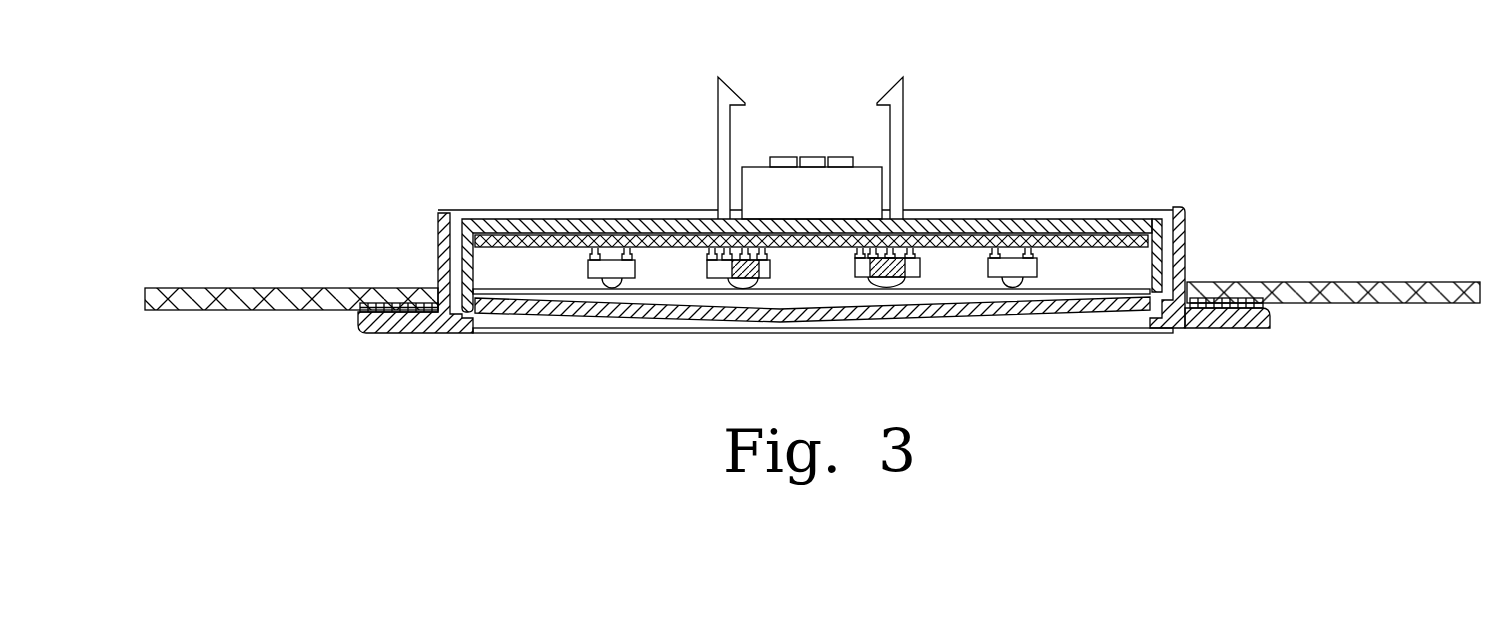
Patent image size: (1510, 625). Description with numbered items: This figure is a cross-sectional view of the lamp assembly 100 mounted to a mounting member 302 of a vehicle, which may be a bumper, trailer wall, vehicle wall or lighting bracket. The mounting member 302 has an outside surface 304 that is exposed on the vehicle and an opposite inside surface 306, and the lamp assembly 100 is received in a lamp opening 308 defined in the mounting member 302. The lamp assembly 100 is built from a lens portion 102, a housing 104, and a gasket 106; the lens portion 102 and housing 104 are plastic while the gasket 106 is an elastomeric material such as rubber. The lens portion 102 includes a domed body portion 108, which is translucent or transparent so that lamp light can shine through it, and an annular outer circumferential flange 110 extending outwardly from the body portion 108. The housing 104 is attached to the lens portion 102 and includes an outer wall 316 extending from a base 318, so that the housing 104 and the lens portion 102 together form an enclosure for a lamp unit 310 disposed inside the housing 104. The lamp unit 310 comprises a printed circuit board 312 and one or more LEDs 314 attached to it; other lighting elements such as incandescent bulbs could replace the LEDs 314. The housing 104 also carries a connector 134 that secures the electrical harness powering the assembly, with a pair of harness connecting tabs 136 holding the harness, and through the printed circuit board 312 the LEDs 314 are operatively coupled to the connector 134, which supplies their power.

The lamp assembly 100 is at (1015, 122).
The lens portion 102 is at (1188, 262).
The housing 104 is at (1045, 218).
The gasket 106 is at (1265, 305).
The domed body portion 108 is at (1108, 310).
The outer circumferential flange 110 is at (1240, 332).
The connector 134 is at (865, 157).
The harness connecting tabs 136 is at (722, 77).
The mounting member 302 is at (275, 290).
The outside surface 304 is at (1397, 322).
The inside surface 306 is at (1328, 268).
The lamp opening 308 is at (430, 280).
The lamp unit 310 is at (569, 248).
The printed circuit board 312 is at (643, 240).
The LEDs 314 is at (883, 283).
The outer wall 316 is at (1162, 236).
The base 318 is at (953, 224).